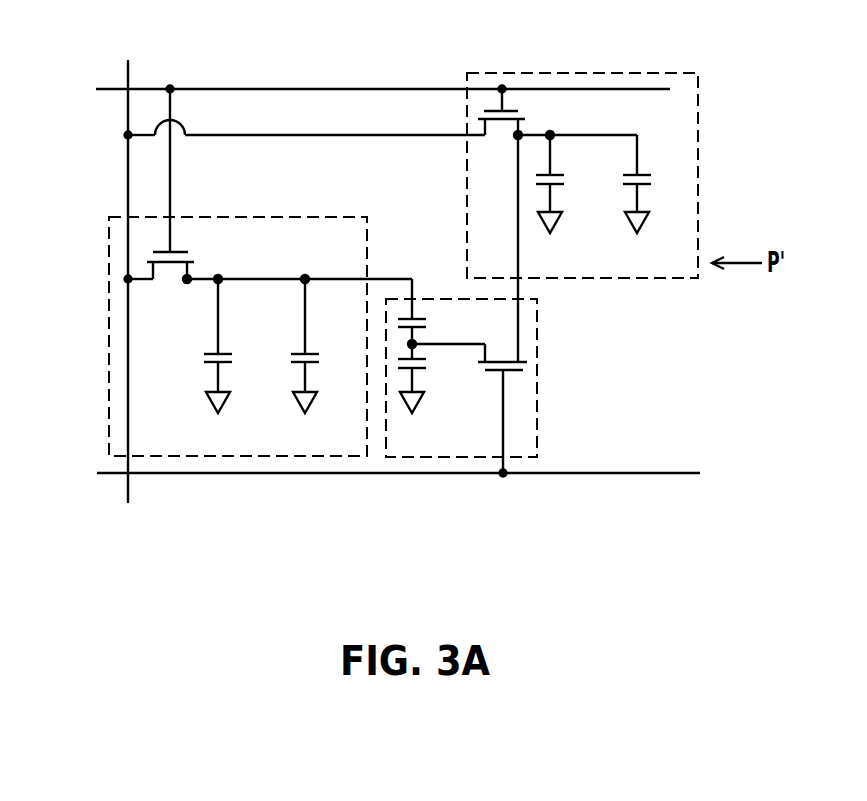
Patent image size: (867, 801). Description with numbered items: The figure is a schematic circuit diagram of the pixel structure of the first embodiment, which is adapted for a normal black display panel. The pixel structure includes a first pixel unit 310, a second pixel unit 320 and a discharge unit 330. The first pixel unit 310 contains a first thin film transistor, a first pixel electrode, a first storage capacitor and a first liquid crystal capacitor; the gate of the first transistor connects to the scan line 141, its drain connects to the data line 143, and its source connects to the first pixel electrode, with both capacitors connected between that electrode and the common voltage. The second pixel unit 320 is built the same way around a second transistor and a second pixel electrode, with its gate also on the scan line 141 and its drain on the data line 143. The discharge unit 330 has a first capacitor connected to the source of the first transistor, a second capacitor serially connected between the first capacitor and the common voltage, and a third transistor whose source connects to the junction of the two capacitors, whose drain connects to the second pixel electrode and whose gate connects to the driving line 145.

The scan line 141 is at (112, 90).
The data line 143 is at (128, 72).
The driving line 145 is at (110, 475).
The first pixel unit 310 is at (293, 217).
The second pixel unit 320 is at (698, 155).
The discharge unit 330 is at (537, 397).